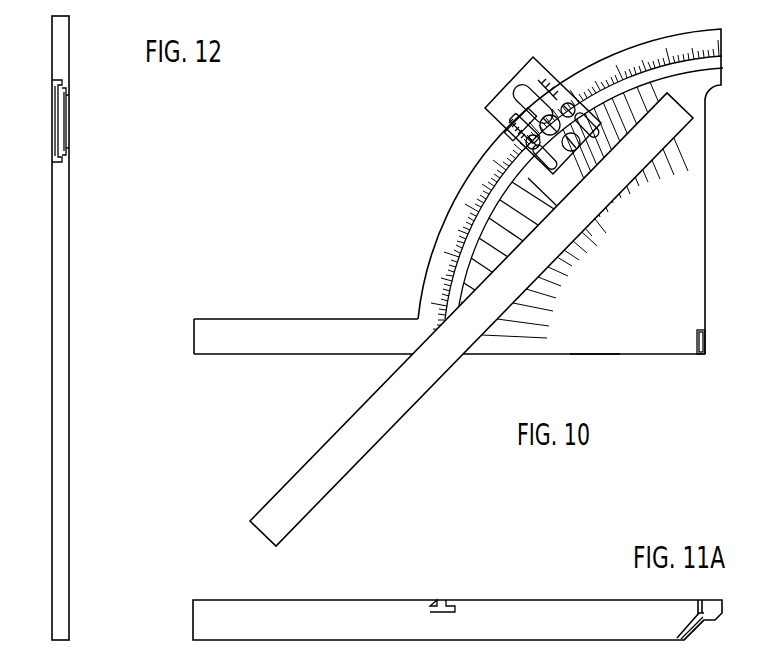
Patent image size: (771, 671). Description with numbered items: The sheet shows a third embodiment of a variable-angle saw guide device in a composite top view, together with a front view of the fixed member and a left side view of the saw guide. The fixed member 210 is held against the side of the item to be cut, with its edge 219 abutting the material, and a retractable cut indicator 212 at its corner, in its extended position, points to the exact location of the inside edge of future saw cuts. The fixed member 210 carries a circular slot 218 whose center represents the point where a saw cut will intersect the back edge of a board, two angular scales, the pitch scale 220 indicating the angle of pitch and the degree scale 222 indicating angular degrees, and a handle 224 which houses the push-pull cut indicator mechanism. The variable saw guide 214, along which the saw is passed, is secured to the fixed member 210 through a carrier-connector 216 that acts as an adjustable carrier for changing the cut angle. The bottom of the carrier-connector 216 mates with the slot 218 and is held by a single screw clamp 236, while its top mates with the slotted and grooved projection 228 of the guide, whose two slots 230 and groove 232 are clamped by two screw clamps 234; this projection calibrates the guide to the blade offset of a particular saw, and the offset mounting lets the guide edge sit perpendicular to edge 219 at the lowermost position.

In FIG. 10, the fixed member 210 is at (675, 285).
In FIG. 10, the cut indicator 212 is at (707, 342).
In FIG. 11A, the cut indicator 212 is at (692, 626).
In FIG. 10, the variable saw guide 214 is at (447, 351).
In FIG. 10, the carrier-connector 216 is at (527, 133).
In FIG. 10, the circular slot 218 is at (706, 64).
In FIG. 11A, the circular slot 218 is at (441, 602).
In FIG. 10, the edge of the fixed member 219 is at (593, 354).
In FIG. 10, the pitch scale 220 is at (600, 258).
In FIG. 10, the degree scale 222 is at (426, 246).
In FIG. 10, the handle 224 is at (283, 330).
In FIG. 12, the slotted and grooved projection 228 is at (63, 81).
In FIG. 10, the slotted and grooved projection 228 is at (523, 72).
In FIG. 12, the slots 230 is at (69, 120).
In FIG. 12, the groove 232 is at (57, 117).
In FIG. 10, the screw clamps 234 is at (572, 106).
In FIG. 10, the screw clamp 236 is at (566, 152).